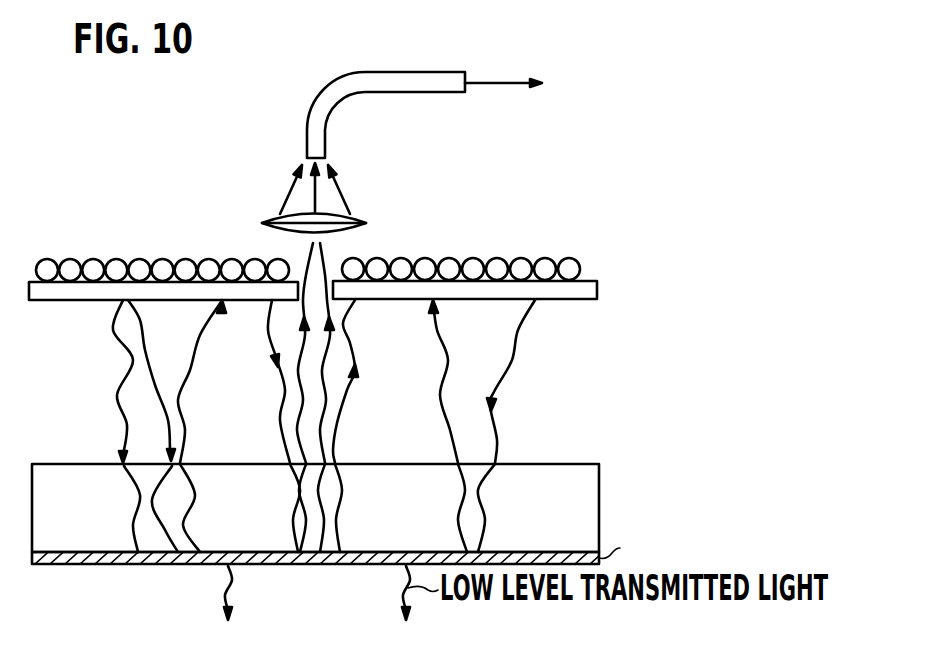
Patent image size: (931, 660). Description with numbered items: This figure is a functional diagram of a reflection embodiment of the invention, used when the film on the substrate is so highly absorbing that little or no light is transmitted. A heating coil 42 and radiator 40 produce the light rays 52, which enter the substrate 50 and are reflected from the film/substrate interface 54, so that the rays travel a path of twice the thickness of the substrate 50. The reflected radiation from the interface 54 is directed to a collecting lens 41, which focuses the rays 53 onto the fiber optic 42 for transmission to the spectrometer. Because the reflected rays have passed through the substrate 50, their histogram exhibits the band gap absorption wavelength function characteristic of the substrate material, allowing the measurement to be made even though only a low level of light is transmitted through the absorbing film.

The radiator 40 is at (597, 290).
The collecting lens 41 is at (368, 222).
The heating coil / fiber optic 42 is at (421, 72).
The substrate 50 is at (599, 478).
The light rays 52 is at (320, 350).
The rays 53 is at (338, 187).
The interface 54 is at (241, 552).